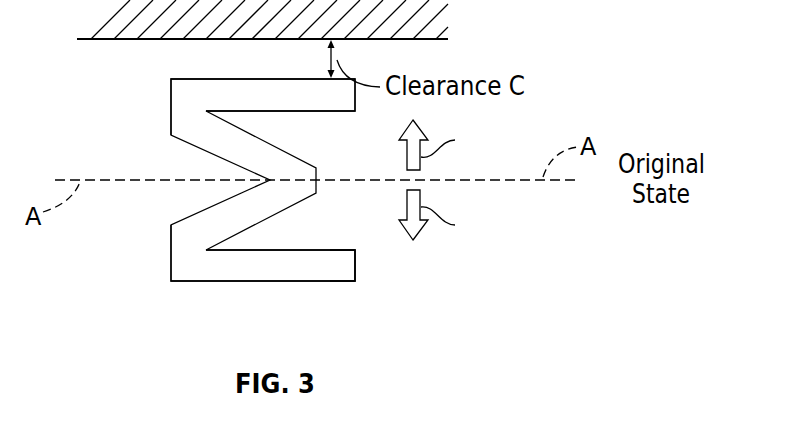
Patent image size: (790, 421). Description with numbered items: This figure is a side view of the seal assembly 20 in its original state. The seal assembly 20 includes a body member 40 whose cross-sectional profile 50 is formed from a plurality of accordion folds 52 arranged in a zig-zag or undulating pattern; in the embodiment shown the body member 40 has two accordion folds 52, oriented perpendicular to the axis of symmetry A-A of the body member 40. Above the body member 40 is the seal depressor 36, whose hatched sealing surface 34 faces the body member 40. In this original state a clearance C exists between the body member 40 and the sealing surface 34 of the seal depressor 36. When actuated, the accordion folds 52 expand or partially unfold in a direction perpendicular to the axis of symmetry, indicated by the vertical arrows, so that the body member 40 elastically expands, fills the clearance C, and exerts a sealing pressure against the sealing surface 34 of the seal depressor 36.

The seal assembly 20 is at (274, 195).
The sealing surface 34 is at (148, 40).
The seal depressor 36 is at (392, 31).
The body member 40 is at (179, 262).
The cross-sectional profile 50 is at (347, 277).
The accordion folds 52 is at (157, 124).